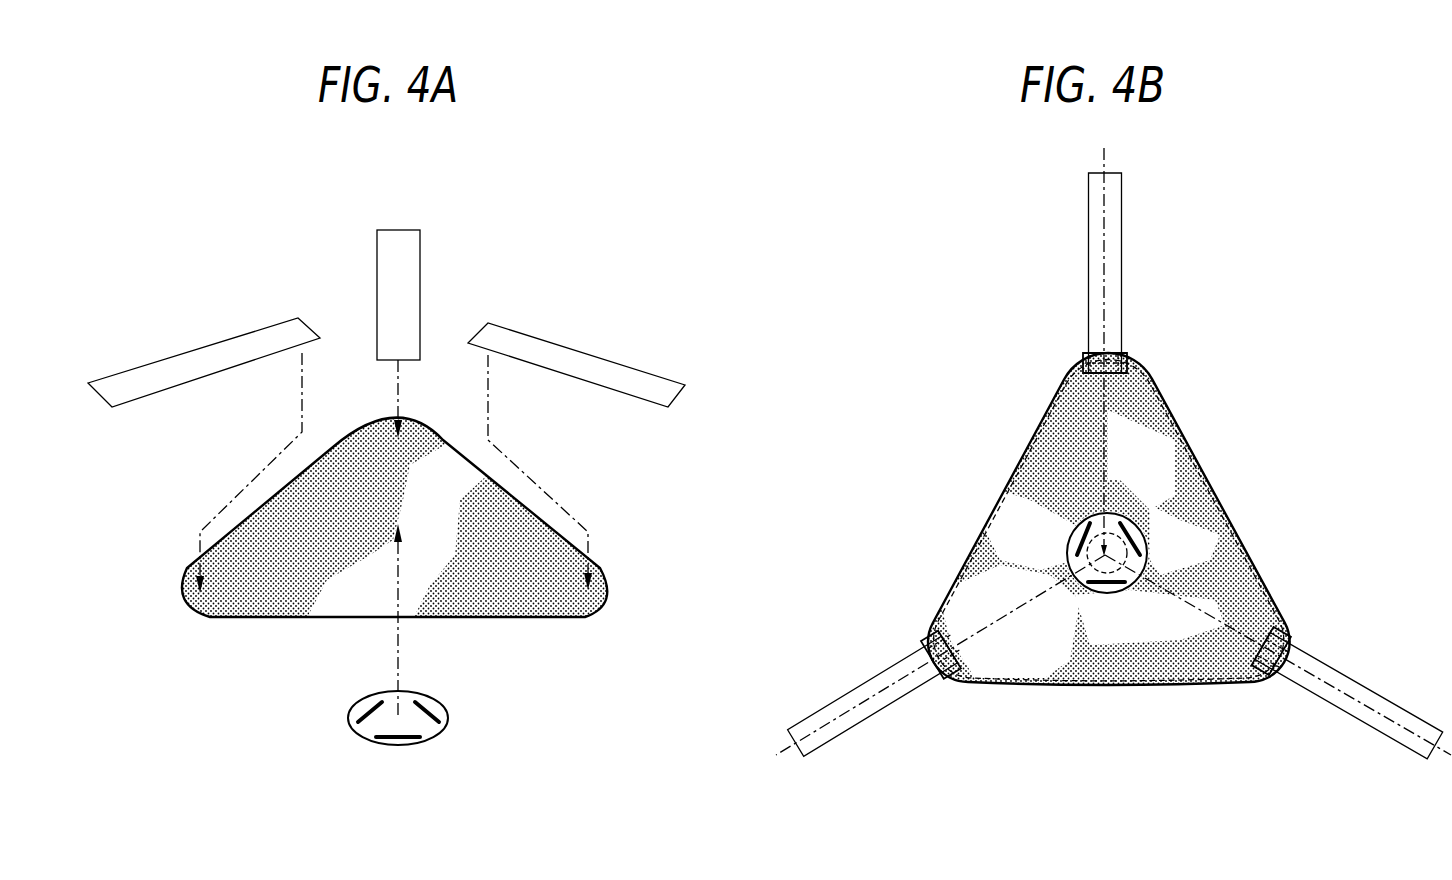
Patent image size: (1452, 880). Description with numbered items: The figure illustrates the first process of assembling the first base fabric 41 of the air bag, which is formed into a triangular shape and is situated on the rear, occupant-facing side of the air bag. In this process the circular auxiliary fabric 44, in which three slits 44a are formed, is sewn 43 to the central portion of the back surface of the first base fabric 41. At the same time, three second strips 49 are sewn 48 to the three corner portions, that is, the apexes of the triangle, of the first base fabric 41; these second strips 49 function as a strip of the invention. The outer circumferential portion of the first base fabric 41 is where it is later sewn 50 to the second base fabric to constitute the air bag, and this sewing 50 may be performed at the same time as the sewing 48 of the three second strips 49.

In FIG. 4A, the first base fabric 41 is at (462, 607).
In FIG. 4B, the first base fabric 41 is at (1085, 662).
In FIG. 4B, the sewing 43 is at (1097, 570).
In FIG. 4A, the auxiliary fabric 44 is at (350, 734).
In FIG. 4B, the auxiliary fabric 44 is at (1125, 509).
In FIG. 4A, the slits 44a is at (370, 703).
In FIG. 4B, the slits 44a is at (1080, 538).
In FIG. 4B, the sewing 48 is at (1098, 358).
In FIG. 4A, the second strips 49 is at (243, 343).
In FIG. 4B, the second strips 49 is at (1108, 218).
In FIG. 4B, the sewing 50 is at (1213, 490).